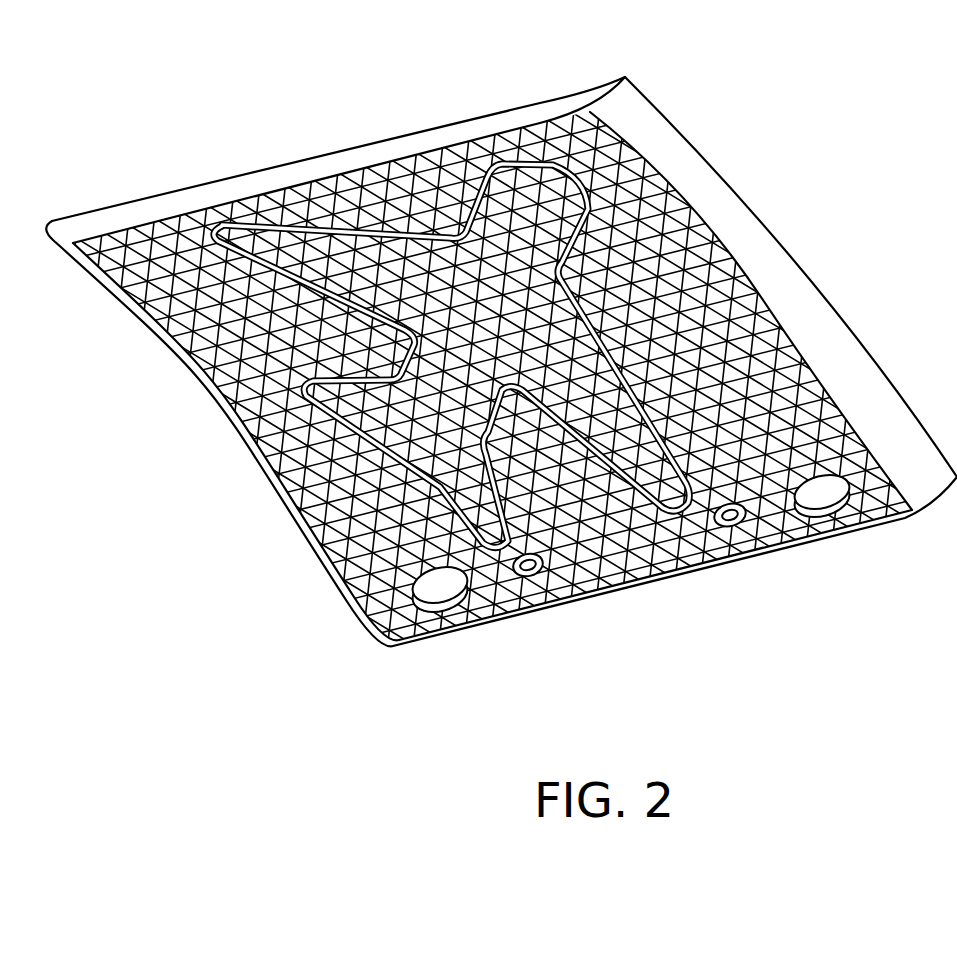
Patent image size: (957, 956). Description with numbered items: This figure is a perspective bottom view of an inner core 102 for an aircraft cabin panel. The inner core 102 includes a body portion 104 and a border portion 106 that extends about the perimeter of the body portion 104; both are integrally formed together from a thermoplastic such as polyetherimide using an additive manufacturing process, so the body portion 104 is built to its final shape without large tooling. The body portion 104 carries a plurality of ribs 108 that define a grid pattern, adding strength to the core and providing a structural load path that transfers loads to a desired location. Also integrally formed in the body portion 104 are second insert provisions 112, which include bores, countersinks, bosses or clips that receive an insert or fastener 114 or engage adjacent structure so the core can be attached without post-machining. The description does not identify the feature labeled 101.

The small alignment holes 101 is at (600, 588).
The panel assembly 102 is at (132, 128).
The base plate 104 is at (225, 372).
The edge flange 106 is at (257, 183).
The lattice infill structure 108 is at (377, 196).
The mounting holes 112 is at (445, 605).
The aircraft-shaped channel 114 is at (512, 152).